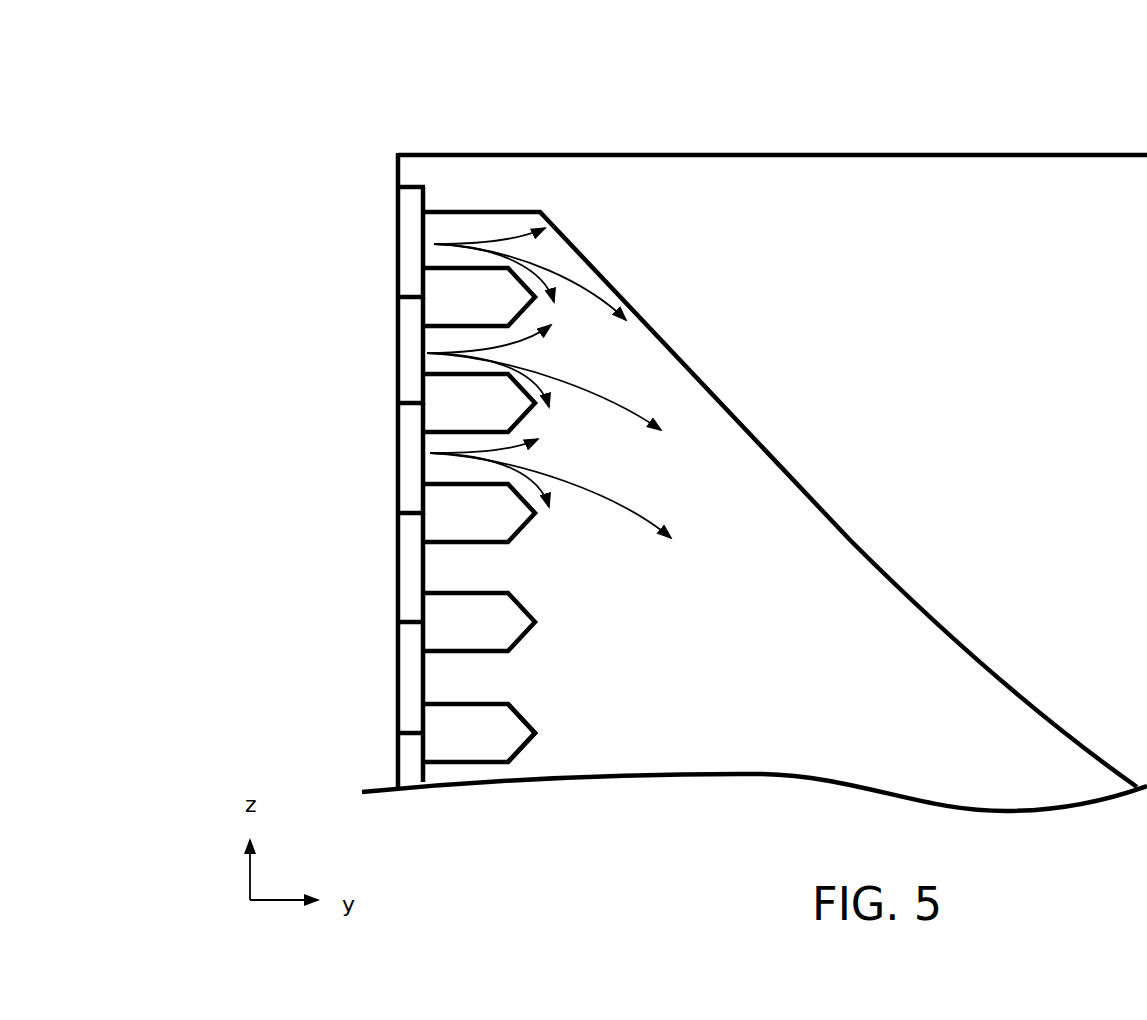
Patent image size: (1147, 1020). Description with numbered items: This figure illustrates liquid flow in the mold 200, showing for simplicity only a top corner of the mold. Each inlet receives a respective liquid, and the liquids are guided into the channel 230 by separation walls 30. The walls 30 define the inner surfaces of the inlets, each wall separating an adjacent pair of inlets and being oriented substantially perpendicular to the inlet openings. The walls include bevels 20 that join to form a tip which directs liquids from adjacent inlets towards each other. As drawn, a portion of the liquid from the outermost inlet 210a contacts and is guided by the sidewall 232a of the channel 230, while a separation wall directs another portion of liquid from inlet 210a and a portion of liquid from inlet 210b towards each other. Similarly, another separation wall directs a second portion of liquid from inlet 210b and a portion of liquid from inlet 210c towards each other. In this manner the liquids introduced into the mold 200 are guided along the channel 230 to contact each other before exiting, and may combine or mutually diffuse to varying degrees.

The mold 200 is at (827, 126).
The inlet 210a is at (411, 247).
The inlet 210b is at (411, 345).
The inlet 210c is at (411, 462).
The sidewall 232a is at (698, 375).
The channel 230 is at (791, 641).
The separation wall 30 is at (458, 626).
The bevel 20 is at (528, 718).